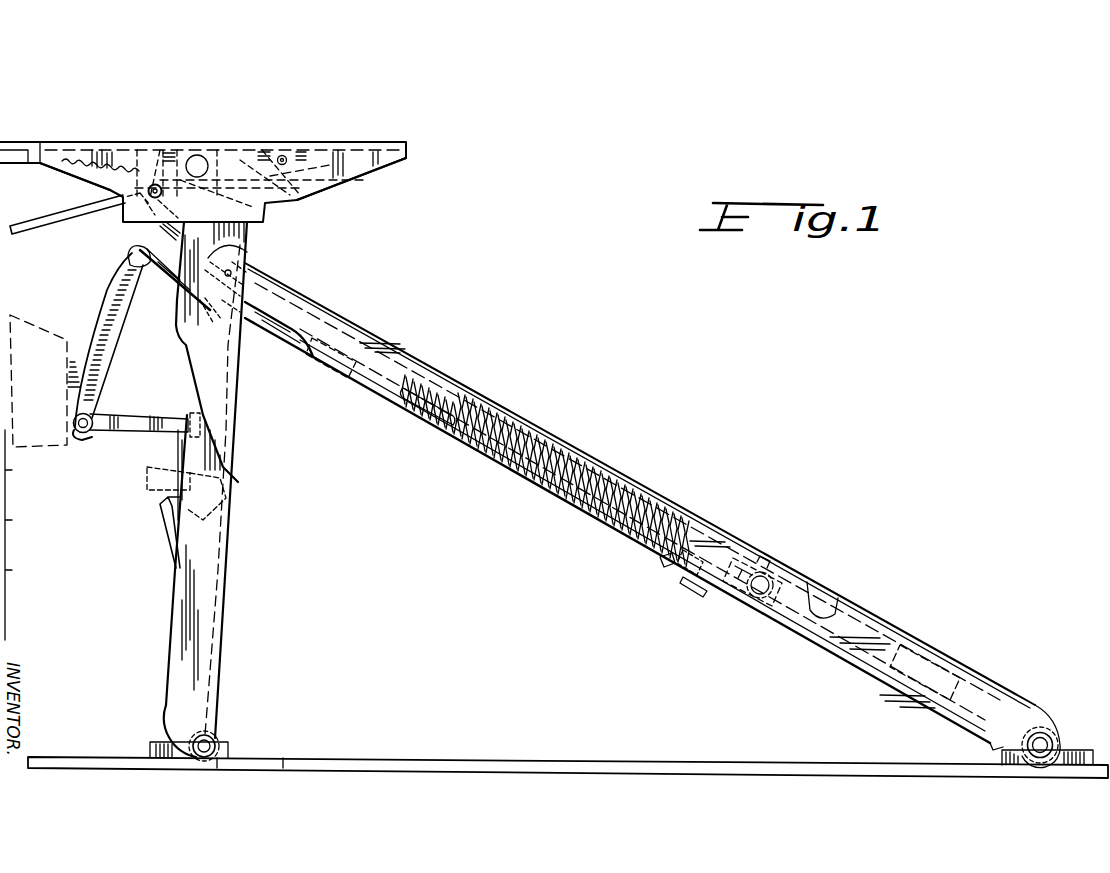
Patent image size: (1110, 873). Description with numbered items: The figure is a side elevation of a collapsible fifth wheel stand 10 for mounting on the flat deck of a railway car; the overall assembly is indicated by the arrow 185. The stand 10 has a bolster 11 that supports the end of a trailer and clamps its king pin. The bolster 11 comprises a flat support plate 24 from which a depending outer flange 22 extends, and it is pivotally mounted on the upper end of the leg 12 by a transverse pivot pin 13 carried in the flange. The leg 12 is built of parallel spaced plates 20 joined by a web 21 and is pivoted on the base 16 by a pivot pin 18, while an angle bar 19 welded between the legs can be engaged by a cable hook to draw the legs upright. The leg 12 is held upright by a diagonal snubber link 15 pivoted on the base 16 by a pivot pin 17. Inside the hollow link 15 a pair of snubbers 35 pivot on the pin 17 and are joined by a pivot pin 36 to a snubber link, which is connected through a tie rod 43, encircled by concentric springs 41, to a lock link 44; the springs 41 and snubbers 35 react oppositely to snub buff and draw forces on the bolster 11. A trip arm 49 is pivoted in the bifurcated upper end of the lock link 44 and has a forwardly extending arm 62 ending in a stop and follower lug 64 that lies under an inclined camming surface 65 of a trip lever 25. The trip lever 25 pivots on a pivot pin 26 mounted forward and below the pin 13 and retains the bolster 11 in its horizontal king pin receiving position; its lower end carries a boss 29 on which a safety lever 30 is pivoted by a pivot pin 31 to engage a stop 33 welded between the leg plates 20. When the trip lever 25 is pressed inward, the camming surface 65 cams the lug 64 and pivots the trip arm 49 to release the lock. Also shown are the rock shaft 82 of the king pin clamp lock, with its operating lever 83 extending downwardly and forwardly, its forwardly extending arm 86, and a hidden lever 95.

The foldable support assembly 185 is at (44, 84).
The collapsible fifth wheel stand 10 is at (572, 438).
The bolster 11 is at (100, 132).
The leg 12 is at (225, 588).
The pivot pin 13 is at (200, 158).
The diagonal snubber link 15 is at (730, 530).
The base 16 is at (452, 742).
The pivot pin 17 is at (1043, 742).
The pivot pin 18 is at (214, 745).
The angle bar 19 is at (165, 524).
The plate 20 is at (175, 610).
The web 21 is at (212, 630).
The outer flange 22 is at (345, 180).
The support plate 24 is at (60, 146).
The trip lever 25 is at (68, 380).
The pivot pin 26 is at (150, 195).
The boss 29 is at (92, 416).
The safety lever 30 is at (148, 418).
The pivot pin 31 is at (88, 434).
The stop 33 is at (192, 436).
The snubber 35 is at (955, 672).
The pivot pin 36 is at (772, 578).
The concentric springs 41 is at (512, 410).
The tie rod 43 is at (690, 520).
The lock link 44 is at (278, 335).
The trip arm 49 is at (178, 290).
The arm 62 is at (130, 268).
The stop and follower lug 64 is at (128, 255).
The camming surface 65 is at (190, 309).
The rock shaft 82 is at (283, 152).
The operating lever 83 is at (58, 222).
The arm 86 is at (300, 204).
The hidden lever 95 is at (160, 148).